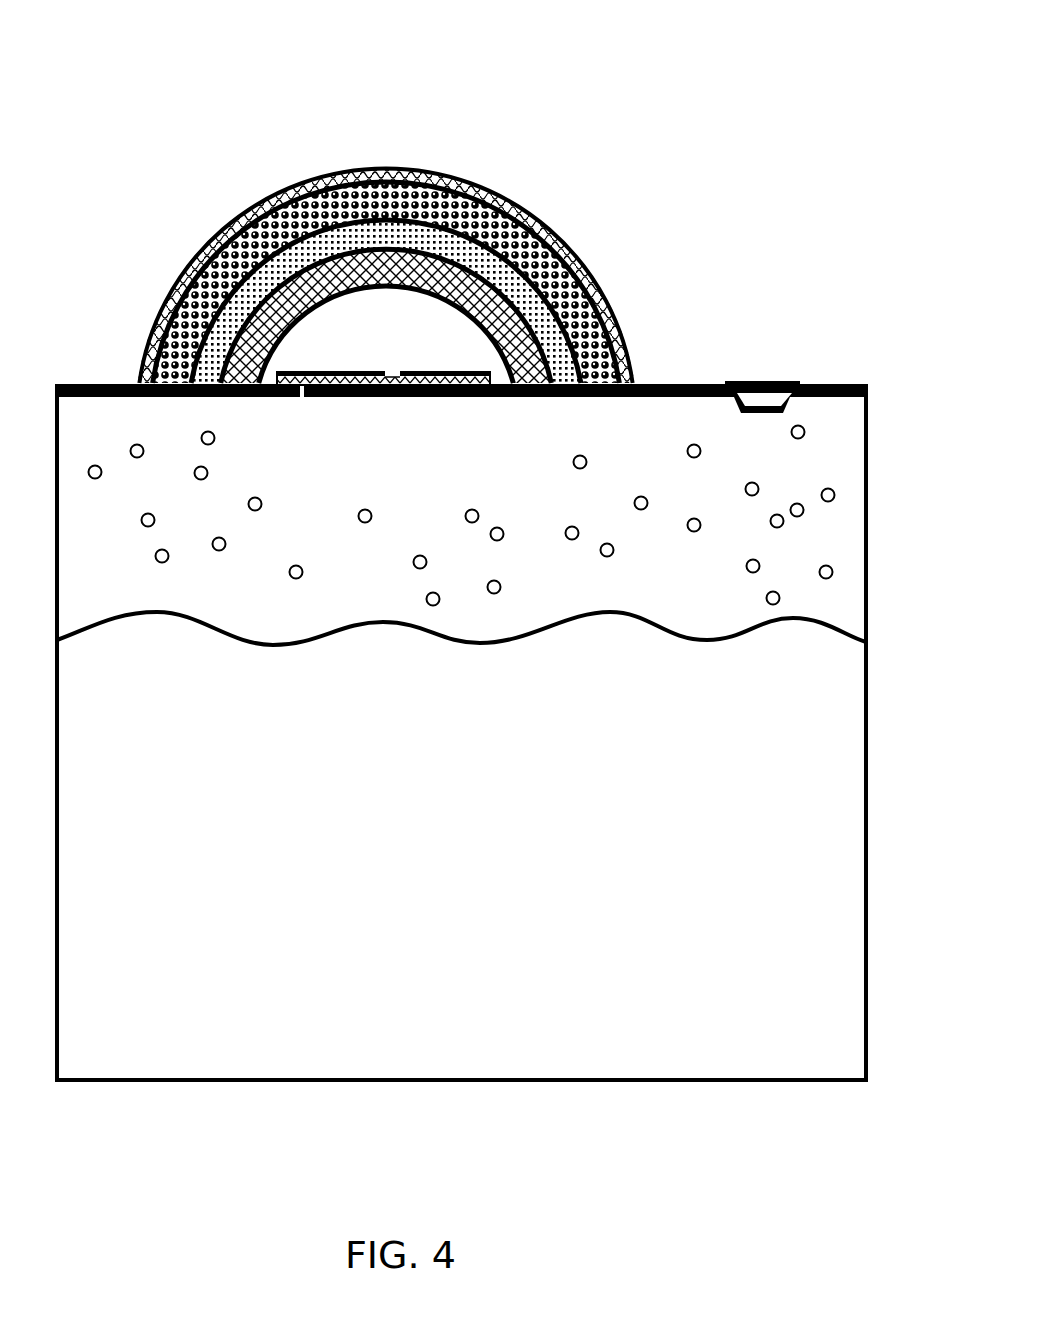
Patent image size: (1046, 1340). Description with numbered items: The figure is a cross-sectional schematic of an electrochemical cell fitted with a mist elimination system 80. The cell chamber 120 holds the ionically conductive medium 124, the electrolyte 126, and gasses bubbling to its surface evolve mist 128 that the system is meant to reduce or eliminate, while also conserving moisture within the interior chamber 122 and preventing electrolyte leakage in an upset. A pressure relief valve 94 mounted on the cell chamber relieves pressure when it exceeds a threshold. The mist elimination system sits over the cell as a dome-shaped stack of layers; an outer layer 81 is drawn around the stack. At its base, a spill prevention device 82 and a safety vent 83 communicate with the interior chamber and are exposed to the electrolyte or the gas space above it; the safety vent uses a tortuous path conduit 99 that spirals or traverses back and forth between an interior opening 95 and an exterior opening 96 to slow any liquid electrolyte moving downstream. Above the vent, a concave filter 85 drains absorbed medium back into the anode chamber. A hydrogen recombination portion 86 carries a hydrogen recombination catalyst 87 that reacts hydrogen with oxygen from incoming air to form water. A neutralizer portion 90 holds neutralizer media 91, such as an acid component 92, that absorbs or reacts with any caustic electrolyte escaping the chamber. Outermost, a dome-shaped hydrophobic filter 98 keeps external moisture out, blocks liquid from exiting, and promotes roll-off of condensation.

The mist elimination system 80 is at (173, 112).
The encapsulant dome 81 is at (197, 242).
The spill prevention device 82 is at (478, 397).
The safety vent 83 is at (342, 397).
The filter 85 is at (530, 248).
The hydrogen recombination portion 86 is at (482, 206).
The hydrogen recombination catalyst 87 is at (500, 260).
The neutralizer portion 90 is at (357, 198).
The neutralizer media 91 is at (400, 235).
The acid component 92 is at (442, 260).
The pressure relief valve 94 is at (764, 397).
The interior opening 95 is at (303, 397).
The exterior opening 96 is at (397, 397).
The hydrophobic filter 98 is at (312, 178).
The tortuous path conduit 99 is at (427, 397).
The cell chamber 120 is at (101, 383).
The interior chamber 122 is at (608, 481).
The ionically conductive medium 124 is at (531, 749).
The electrolyte 126 is at (641, 749).
The mist 128 is at (802, 425).